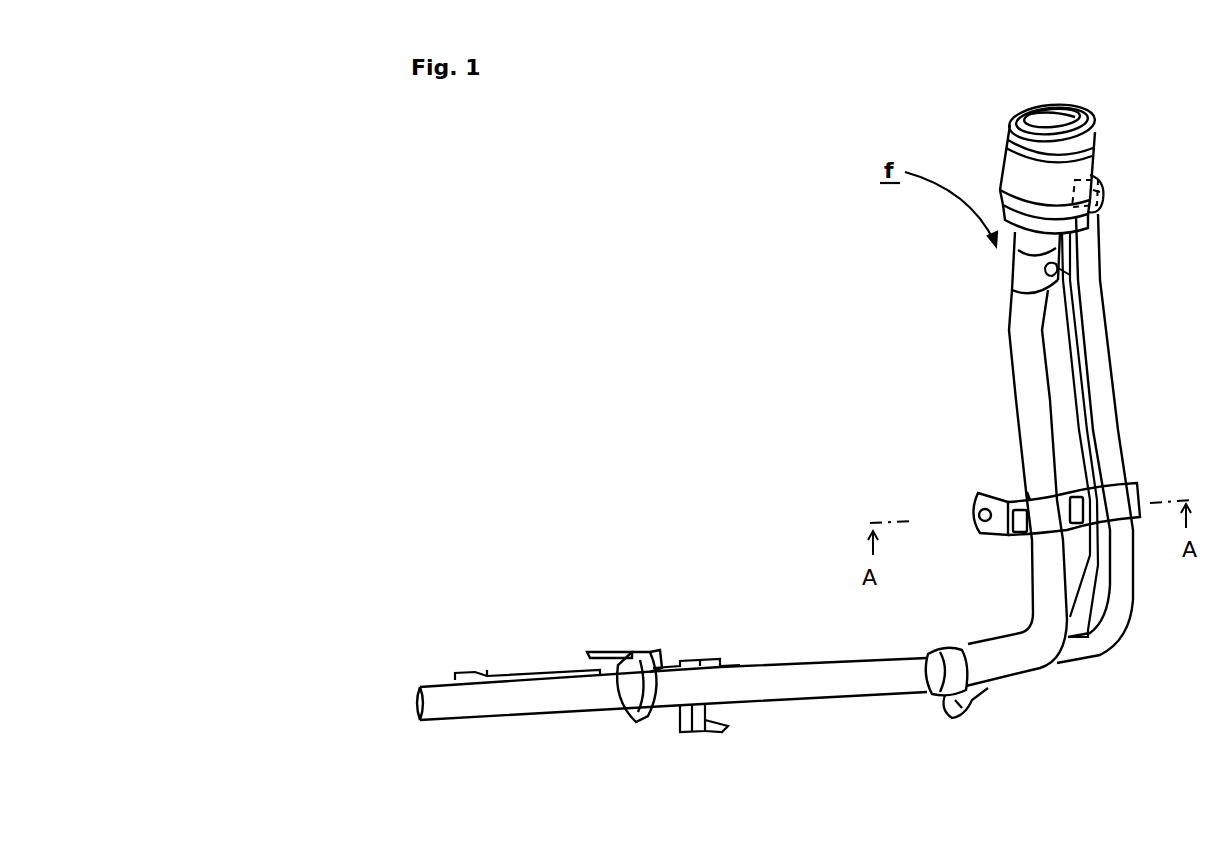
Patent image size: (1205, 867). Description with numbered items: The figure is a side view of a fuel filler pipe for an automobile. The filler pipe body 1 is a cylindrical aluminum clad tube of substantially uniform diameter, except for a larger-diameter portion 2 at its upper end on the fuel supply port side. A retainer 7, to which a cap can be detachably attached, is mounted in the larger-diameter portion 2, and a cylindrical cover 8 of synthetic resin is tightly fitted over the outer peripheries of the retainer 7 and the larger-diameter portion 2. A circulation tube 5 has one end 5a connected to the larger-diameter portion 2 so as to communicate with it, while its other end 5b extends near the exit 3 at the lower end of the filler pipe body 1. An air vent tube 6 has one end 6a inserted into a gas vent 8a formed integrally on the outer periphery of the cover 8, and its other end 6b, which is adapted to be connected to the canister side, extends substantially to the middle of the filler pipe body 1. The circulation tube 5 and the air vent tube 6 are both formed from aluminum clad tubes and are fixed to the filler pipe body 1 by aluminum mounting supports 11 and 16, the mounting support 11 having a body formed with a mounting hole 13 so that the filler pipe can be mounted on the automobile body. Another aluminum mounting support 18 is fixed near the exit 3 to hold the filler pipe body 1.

The filler pipe body 1 is at (1015, 380).
The larger-diameter portion 2 is at (1030, 243).
The exit 3 is at (418, 700).
The circulation tube 5 is at (1080, 380).
The end of circulation tube 5a is at (1060, 268).
The other end of circulation tube 5b is at (465, 675).
The air vent tube 6 is at (1097, 338).
The one end of air vent tube 6a is at (1100, 190).
The other end of air vent tube 6b is at (985, 696).
The retainer 7 is at (1060, 110).
The cylindrical cover 8 is at (1010, 165).
The gas vent 8a is at (1090, 205).
The mounting support 11 is at (1040, 518).
The mounting hole 13 is at (976, 530).
The mounting support 16 is at (946, 650).
The mounting support 18 is at (628, 700).